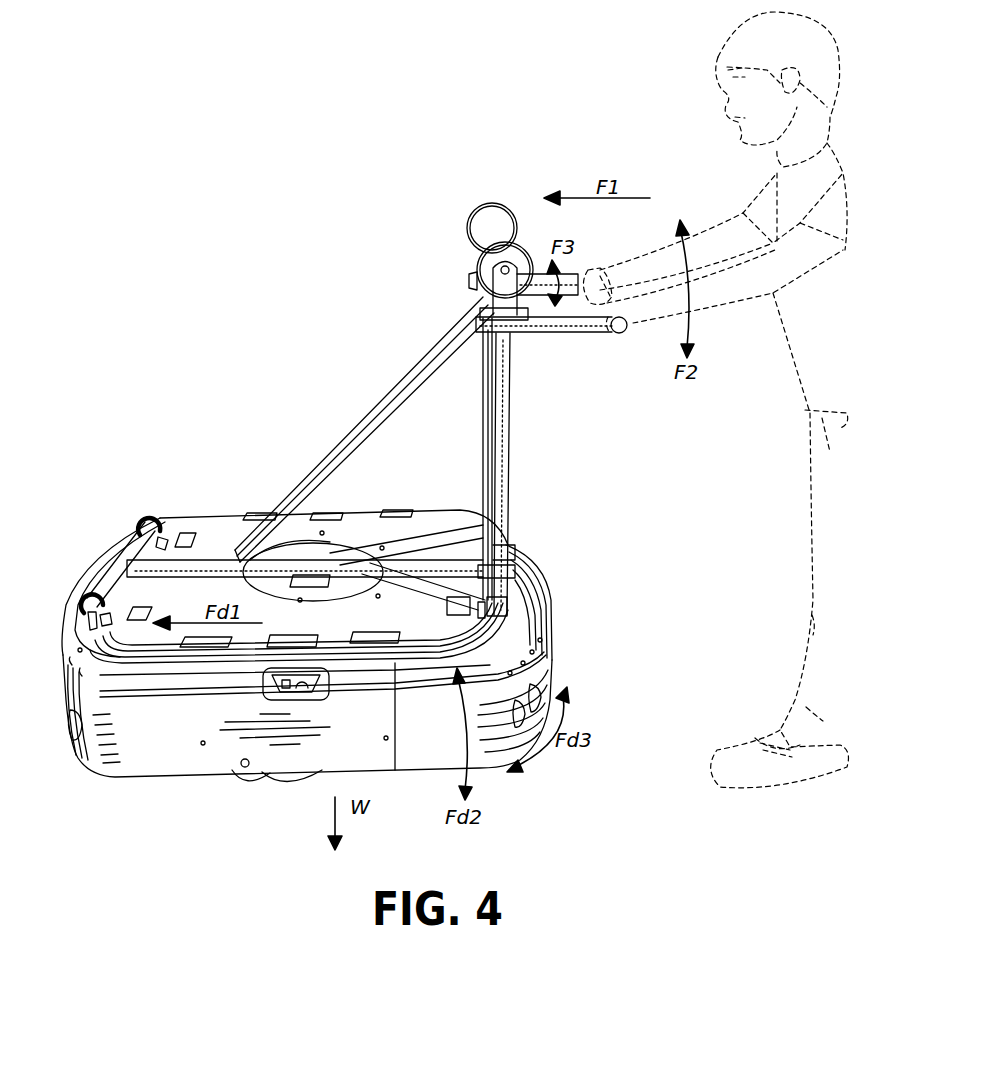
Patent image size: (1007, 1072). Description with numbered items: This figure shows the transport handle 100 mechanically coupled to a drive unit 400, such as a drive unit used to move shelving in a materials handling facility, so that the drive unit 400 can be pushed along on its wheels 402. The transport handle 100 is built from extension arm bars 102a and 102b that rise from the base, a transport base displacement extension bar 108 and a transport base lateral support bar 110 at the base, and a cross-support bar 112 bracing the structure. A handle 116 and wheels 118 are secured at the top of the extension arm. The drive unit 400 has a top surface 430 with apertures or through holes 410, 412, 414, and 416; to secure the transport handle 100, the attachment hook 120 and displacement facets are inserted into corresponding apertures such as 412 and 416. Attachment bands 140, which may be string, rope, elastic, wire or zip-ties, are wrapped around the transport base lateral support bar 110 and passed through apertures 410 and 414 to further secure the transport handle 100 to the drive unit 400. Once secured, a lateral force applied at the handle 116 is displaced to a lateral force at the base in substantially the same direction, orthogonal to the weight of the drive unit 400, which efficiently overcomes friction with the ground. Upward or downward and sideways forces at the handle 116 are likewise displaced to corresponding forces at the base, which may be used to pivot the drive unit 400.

The transport handle 100 is at (346, 413).
The extension arm bar 102a is at (483, 415).
The extension arm bar 102b is at (500, 494).
The transport base displacement extension bar 108 is at (342, 552).
The transport base lateral support bar 110 is at (125, 562).
The cross-support bar 112 is at (332, 461).
The handle 116 is at (623, 331).
The wheels 118 is at (520, 258).
The attachment member or hook 120 is at (503, 571).
The attachment bands 140 is at (144, 520).
The drive unit 400 is at (170, 762).
The wheels 402 is at (292, 775).
The aperture or through hole 410 is at (115, 622).
The aperture or through hole 412 is at (476, 616).
The aperture or through hole 414 is at (165, 535).
The aperture or through hole 416 is at (515, 553).
The top surface 430 is at (224, 530).